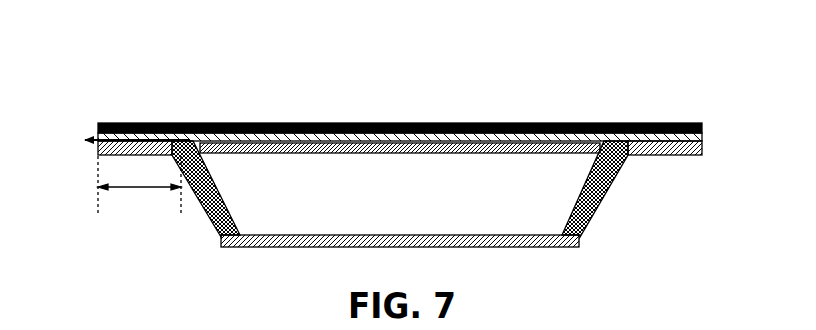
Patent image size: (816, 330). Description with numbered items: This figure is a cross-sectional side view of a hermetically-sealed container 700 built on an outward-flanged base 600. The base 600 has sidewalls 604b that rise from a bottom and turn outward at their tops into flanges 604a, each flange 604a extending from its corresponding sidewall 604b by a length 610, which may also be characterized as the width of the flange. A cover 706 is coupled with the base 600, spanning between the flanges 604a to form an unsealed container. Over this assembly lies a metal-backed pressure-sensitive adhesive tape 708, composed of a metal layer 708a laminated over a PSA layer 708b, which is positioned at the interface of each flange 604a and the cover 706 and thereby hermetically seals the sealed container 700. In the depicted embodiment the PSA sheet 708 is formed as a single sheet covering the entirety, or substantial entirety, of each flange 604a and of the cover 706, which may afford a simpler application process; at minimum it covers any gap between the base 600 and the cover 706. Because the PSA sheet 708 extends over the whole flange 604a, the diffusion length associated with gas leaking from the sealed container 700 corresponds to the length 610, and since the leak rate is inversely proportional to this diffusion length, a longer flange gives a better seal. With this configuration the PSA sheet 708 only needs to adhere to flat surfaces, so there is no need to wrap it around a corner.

The hermetically-sealed container 700 is at (143, 70).
The metal-backed pressure-sensitive adhesive tape 708 is at (424, 108).
The metal layer 708a is at (522, 124).
The PSA layer 708b is at (443, 123).
The cover 706 is at (234, 122).
The flange 604a is at (97, 150).
The sidewall 604b is at (214, 228).
The outward-flanged base 600 is at (478, 249).
The length 610 is at (133, 190).